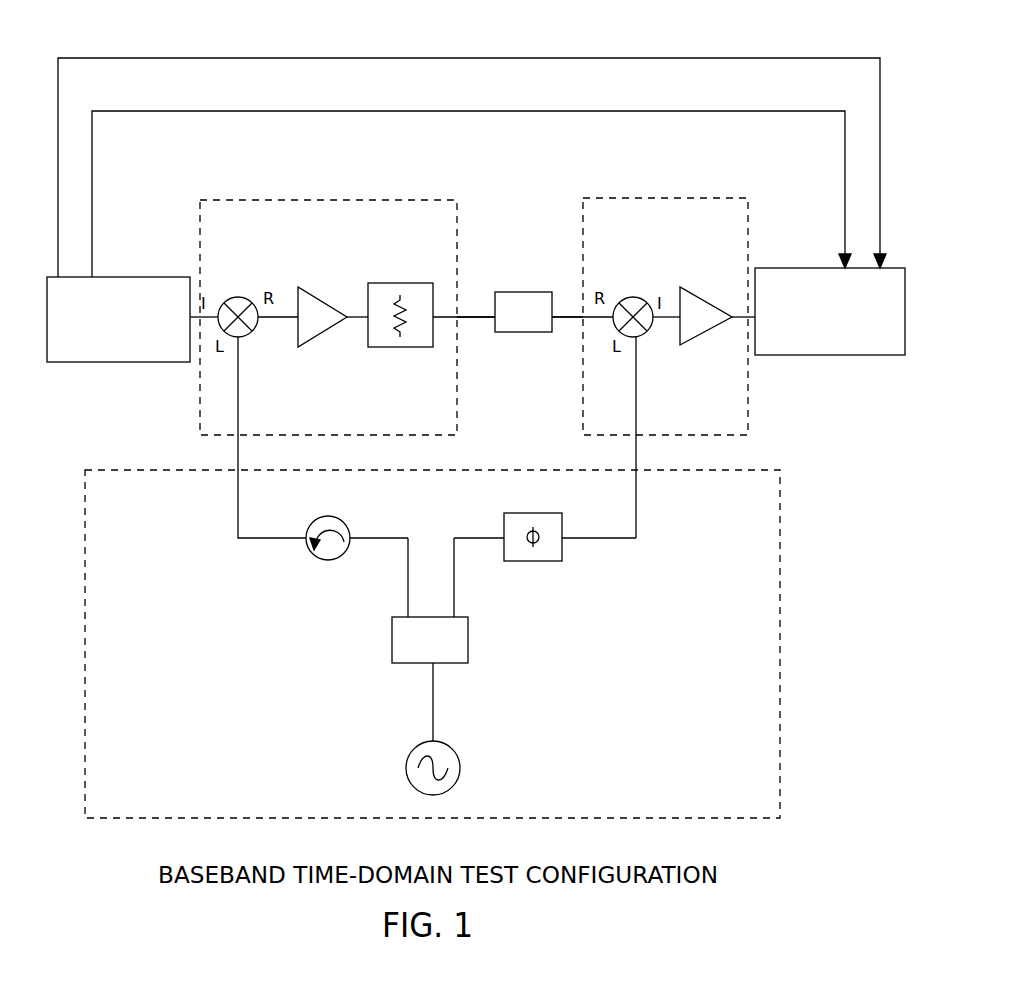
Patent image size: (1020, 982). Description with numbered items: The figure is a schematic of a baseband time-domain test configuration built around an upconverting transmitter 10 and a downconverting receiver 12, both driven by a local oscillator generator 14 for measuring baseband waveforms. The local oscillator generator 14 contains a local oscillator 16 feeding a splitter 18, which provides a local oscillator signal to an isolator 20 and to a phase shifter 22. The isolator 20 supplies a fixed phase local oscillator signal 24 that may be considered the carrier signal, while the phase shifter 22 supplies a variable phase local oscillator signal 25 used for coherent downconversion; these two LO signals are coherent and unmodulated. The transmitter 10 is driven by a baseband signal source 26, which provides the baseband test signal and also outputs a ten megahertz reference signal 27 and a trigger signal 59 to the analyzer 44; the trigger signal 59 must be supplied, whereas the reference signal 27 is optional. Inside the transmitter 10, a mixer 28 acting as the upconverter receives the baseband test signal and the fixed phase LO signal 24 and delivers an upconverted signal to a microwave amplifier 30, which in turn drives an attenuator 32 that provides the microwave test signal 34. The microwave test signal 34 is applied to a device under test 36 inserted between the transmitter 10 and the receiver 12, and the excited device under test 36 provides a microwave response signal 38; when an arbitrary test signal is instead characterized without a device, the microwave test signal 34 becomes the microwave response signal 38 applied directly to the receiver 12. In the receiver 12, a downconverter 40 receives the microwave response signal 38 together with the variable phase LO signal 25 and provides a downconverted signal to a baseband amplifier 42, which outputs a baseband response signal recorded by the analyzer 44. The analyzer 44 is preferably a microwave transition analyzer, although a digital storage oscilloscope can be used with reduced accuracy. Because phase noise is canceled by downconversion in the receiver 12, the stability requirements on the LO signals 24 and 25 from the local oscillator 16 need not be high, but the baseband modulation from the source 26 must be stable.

The upconverting transmitter 10 is at (313, 200).
The downconverting receiver 12 is at (648, 198).
The local oscillator generator 14 is at (780, 578).
The local oscillator 16 is at (458, 750).
The splitter 18 is at (450, 663).
The isolator 20 is at (332, 560).
The phase shifter 22 is at (522, 561).
The fixed phase local oscillator signal 24 is at (238, 500).
The variable phase local oscillator signal 25 is at (636, 500).
The baseband signal source 26 is at (104, 277).
The reference signal 27 is at (460, 111).
The mixer 28 is at (254, 329).
The microwave amplifier 30 is at (340, 308).
The attenuator 32 is at (383, 347).
The microwave test signal 34 is at (473, 315).
The device under test 36 is at (503, 332).
The microwave response signal 38 is at (568, 313).
The downconverter 40 is at (649, 329).
The baseband amplifier 42 is at (712, 305).
The analyzer 44 is at (768, 268).
The trigger signal 59 is at (465, 58).